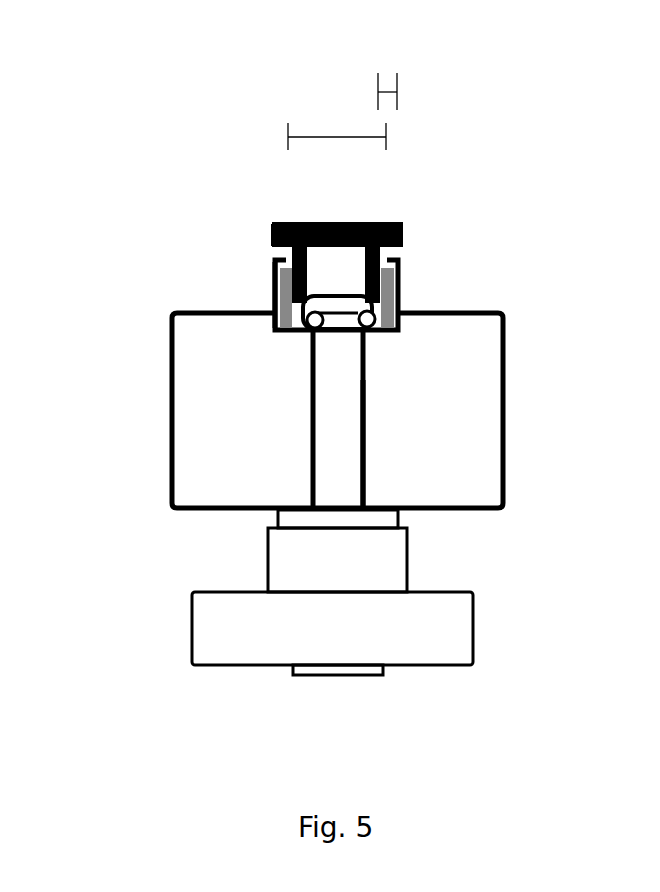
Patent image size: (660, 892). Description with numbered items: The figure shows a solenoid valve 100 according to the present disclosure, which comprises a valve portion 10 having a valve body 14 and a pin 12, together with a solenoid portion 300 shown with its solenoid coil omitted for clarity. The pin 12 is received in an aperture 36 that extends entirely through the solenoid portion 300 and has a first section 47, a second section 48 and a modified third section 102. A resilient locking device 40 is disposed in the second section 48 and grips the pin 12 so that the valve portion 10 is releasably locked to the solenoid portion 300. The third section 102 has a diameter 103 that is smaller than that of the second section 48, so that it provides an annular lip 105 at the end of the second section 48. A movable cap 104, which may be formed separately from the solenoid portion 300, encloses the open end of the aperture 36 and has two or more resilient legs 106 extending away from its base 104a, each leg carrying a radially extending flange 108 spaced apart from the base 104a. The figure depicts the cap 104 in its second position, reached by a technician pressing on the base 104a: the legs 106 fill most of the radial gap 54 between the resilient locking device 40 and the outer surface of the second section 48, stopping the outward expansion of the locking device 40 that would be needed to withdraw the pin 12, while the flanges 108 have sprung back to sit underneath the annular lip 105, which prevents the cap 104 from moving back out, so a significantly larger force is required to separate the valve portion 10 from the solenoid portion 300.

The valve portion 10 is at (238, 707).
The solenoid valve 100 is at (519, 94).
The third section 102 is at (398, 257).
The movable cap 104 is at (366, 222).
The base 104a is at (282, 222).
The annular lip 105 is at (398, 284).
The resilient legs 106 is at (272, 230).
The radially extending flange 108 is at (273, 267).
The diameter 103 is at (329, 137).
The radial gap 54 is at (389, 75).
The aperture 36 is at (350, 354).
The resilient locking device 40 is at (398, 303).
The second section 48 is at (396, 312).
The solenoid portion 300 is at (145, 395).
The pin 12 is at (351, 400).
The first section 47 is at (367, 452).
The valve body 14 is at (115, 518).